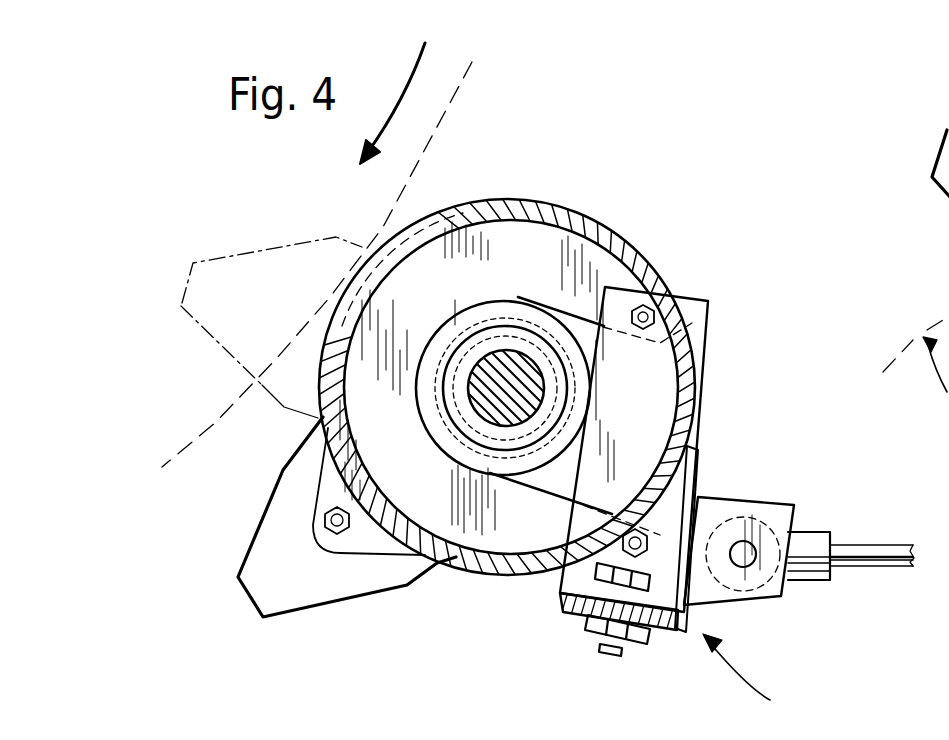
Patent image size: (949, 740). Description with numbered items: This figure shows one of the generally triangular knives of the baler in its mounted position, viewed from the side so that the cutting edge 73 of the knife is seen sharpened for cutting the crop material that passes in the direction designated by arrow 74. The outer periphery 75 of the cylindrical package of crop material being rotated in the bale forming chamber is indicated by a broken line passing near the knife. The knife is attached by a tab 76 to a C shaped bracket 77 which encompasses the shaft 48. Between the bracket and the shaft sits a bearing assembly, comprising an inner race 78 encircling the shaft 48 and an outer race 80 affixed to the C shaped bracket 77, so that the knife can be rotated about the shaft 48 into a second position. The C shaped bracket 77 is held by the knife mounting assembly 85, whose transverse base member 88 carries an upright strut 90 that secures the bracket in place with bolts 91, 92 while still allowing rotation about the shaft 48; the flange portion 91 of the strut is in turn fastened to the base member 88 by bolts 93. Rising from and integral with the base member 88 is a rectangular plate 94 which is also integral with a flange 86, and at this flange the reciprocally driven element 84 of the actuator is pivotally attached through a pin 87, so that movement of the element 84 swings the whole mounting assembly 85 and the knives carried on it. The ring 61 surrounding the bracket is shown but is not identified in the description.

The shaft 48 is at (509, 402).
The rotary gear ring 61 is at (604, 226).
The edge 73 is at (265, 252).
The arrow 74 is at (398, 86).
The outer periphery 75 is at (470, 118).
The tab 76 is at (373, 540).
The C shaped bracket 77 is at (455, 296).
The inner race 78 is at (443, 462).
The outer race 80 is at (493, 306).
The reciprocally driven element 84 is at (873, 553).
The knife mounting assembly 85 is at (825, 525).
The flange 86 is at (773, 508).
The pin 87 is at (743, 556).
The transverse base member 88 is at (650, 630).
The upright strut 90 is at (652, 392).
The bolt 91 is at (640, 310).
The bolt 92 is at (643, 535).
The bolt 93 is at (612, 654).
The rectangular plate 94 is at (700, 445).